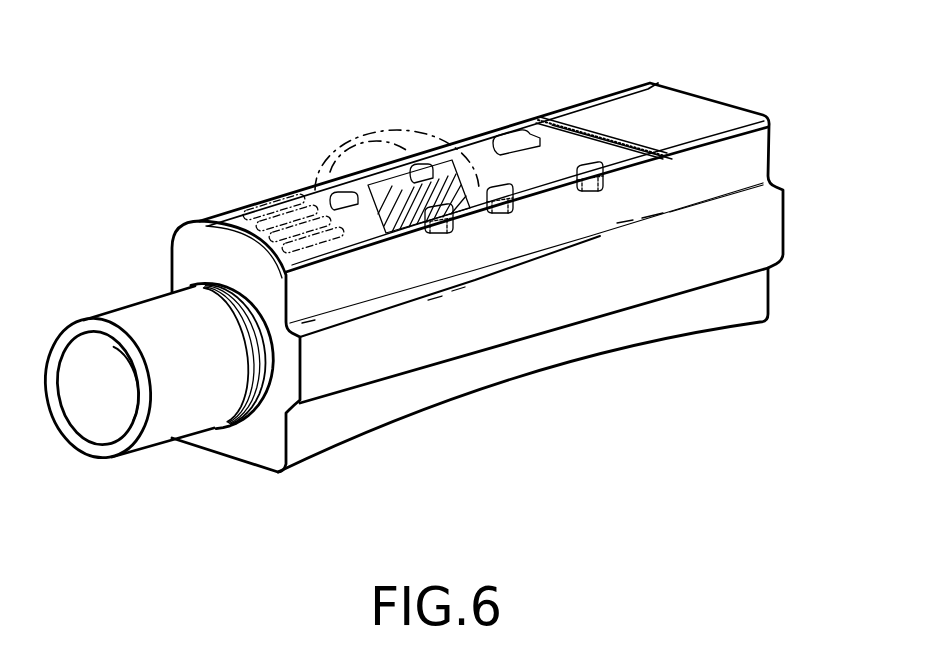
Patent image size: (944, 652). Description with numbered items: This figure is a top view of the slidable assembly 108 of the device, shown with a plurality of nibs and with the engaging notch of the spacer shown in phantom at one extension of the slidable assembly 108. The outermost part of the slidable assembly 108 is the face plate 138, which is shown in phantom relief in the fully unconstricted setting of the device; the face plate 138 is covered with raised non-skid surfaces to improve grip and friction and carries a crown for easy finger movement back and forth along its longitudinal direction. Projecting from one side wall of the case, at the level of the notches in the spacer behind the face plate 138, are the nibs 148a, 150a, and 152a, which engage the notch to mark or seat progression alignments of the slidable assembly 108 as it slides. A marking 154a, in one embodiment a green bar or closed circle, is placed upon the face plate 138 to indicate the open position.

The slidable assembly 108 is at (352, 135).
The face plate 138 is at (493, 166).
The nib 148a is at (590, 192).
The nib 150a is at (500, 214).
The nib 152a is at (438, 234).
The marking 154a is at (607, 130).